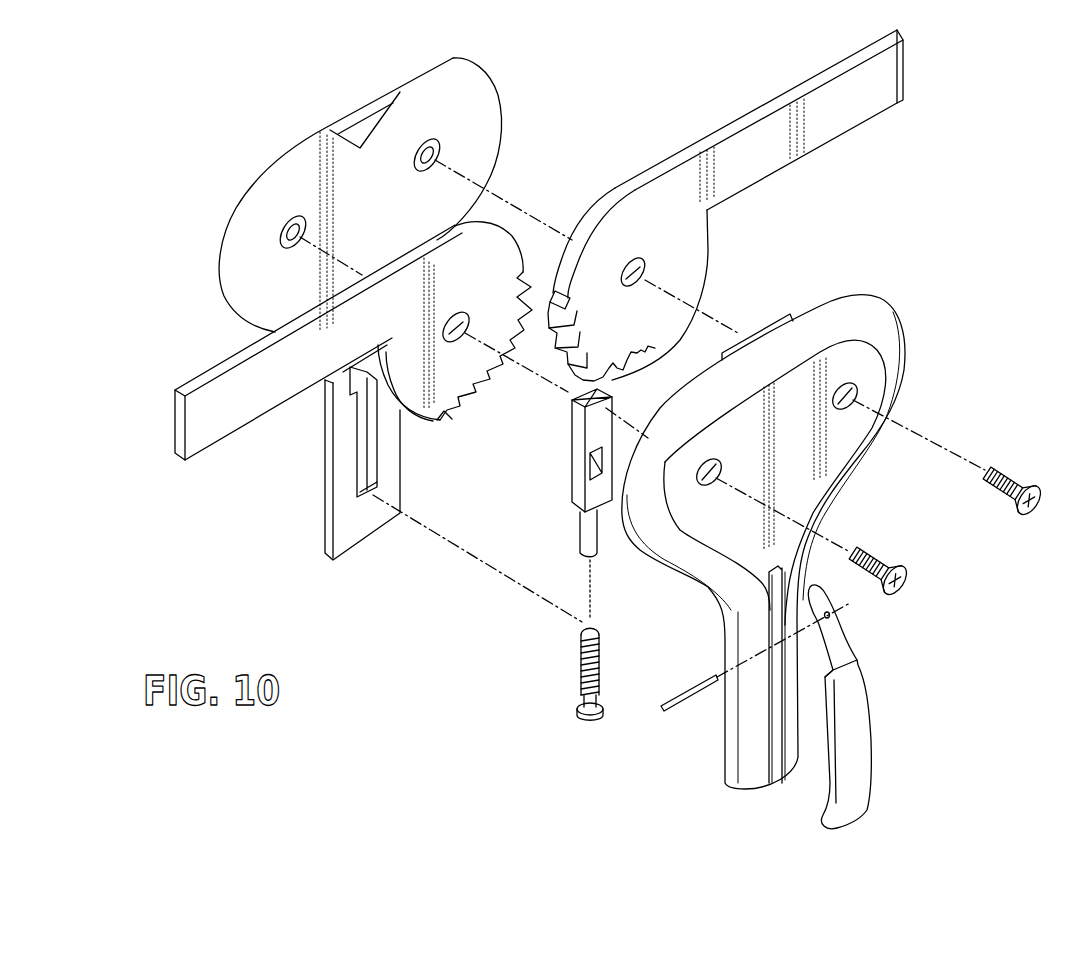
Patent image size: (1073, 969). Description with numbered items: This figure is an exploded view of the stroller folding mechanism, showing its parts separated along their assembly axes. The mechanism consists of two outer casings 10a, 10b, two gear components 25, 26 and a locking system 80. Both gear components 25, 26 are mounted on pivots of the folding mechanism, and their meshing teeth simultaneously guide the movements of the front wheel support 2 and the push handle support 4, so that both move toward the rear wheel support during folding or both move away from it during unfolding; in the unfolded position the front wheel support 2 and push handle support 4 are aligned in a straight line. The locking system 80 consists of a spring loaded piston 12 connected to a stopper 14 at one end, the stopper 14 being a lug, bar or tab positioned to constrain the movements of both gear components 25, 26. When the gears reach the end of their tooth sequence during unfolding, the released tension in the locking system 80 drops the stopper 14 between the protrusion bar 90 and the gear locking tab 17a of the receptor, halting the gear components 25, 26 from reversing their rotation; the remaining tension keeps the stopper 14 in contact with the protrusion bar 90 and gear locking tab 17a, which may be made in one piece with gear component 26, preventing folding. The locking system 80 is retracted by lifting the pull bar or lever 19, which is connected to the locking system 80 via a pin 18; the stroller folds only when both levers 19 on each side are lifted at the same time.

The front wheel support 2 is at (837, 124).
The push handle support 4 is at (220, 423).
The outer casing 10a is at (865, 315).
The outer casing 10b is at (482, 102).
The spring loaded piston 12 is at (578, 703).
The stopper 14 is at (579, 420).
The gear locking tab 17a is at (457, 412).
The pin 18 is at (690, 703).
The lever 19 is at (855, 710).
The gear component 25 is at (690, 270).
The gear component 26 is at (437, 398).
The locking system 80 is at (577, 482).
The protrusion bar 90 is at (627, 376).